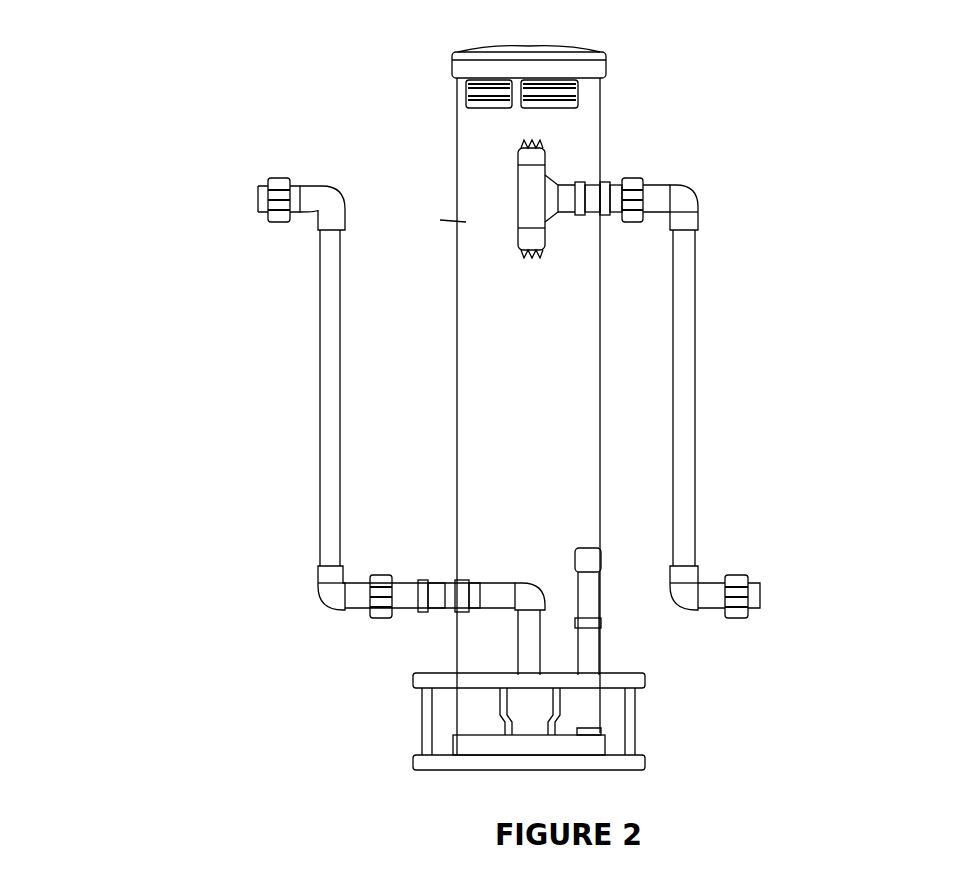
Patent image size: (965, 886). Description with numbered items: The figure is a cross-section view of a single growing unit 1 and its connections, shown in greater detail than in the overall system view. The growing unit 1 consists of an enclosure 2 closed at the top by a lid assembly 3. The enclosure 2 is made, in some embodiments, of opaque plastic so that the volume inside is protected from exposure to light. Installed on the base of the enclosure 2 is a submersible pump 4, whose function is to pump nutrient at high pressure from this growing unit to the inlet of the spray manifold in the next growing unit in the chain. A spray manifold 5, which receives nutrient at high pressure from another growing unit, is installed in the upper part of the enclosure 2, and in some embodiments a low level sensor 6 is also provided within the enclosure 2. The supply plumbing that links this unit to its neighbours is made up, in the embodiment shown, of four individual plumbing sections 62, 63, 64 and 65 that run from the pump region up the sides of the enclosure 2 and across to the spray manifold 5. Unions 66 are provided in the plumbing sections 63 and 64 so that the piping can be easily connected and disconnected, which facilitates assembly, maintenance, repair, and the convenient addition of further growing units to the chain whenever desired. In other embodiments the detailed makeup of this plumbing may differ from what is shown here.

The growing unit 1 is at (630, 337).
The enclosure 2 is at (463, 222).
The lid assembly 3 is at (575, 61).
The submersible pump 4 is at (520, 719).
The spray manifold 5 is at (550, 205).
The low level sensor 6 is at (612, 599).
The plumbing section 62 is at (530, 661).
The plumbing section 63 is at (407, 595).
The plumbing section 64 is at (325, 446).
The plumbing section 65 is at (303, 190).
The union 66 is at (285, 218).